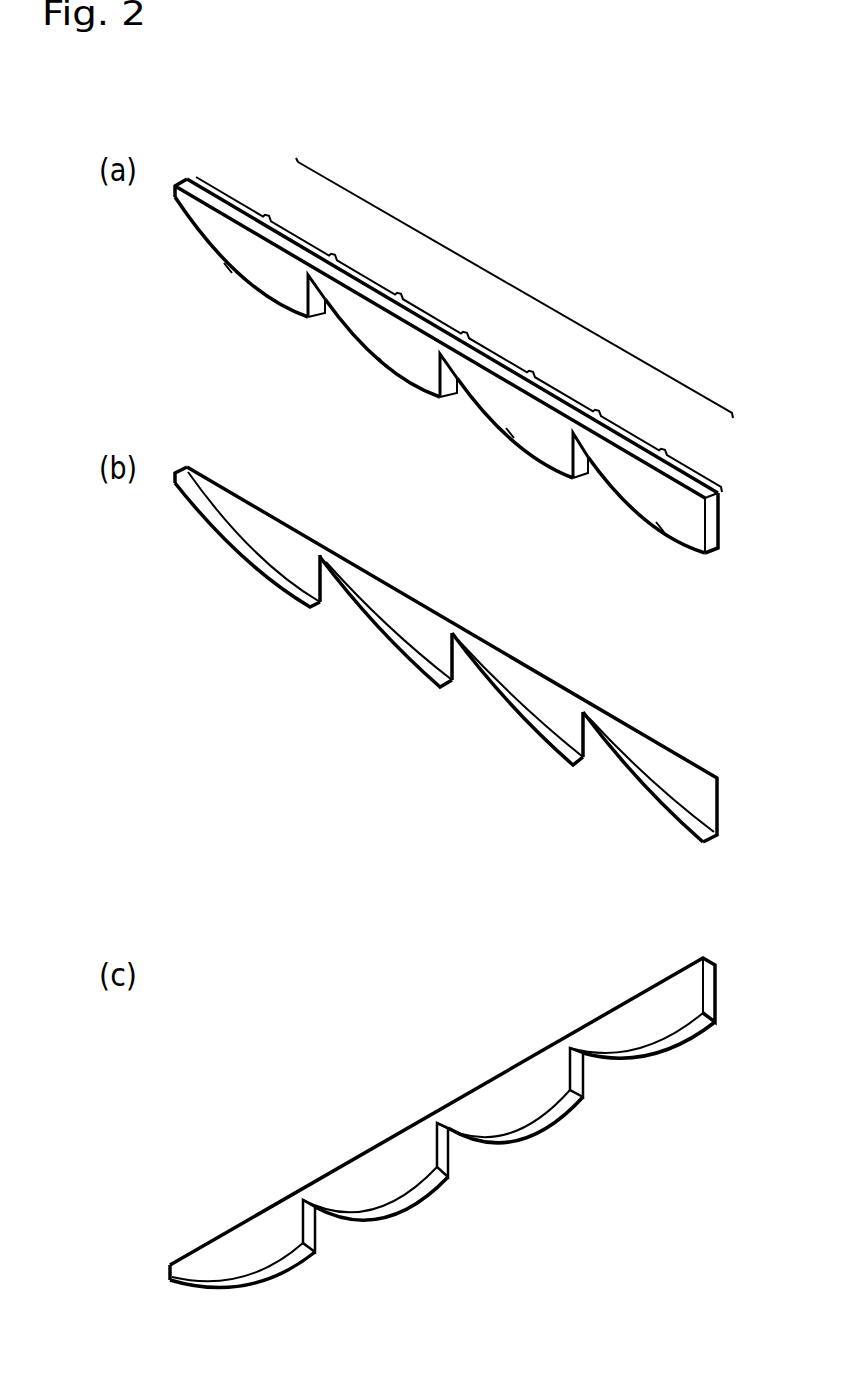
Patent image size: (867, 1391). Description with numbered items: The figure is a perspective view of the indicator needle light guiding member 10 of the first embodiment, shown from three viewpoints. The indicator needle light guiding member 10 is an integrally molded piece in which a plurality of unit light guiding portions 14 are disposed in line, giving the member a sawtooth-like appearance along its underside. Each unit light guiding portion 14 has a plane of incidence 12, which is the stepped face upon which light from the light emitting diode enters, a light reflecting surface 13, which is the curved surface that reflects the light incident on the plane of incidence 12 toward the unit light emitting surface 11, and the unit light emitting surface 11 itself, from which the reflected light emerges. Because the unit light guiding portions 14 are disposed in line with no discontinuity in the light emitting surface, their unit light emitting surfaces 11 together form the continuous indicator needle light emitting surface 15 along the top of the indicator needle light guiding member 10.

The indicator needle light guiding member 10 is at (728, 248).
The unit light emitting surface 11 is at (459, 334).
The plane of incidence 12 is at (318, 312).
The light reflecting surface 13 is at (275, 302).
The unit light guiding portion 14 is at (234, 265).
The indicator needle light emitting surface 15 is at (514, 288).